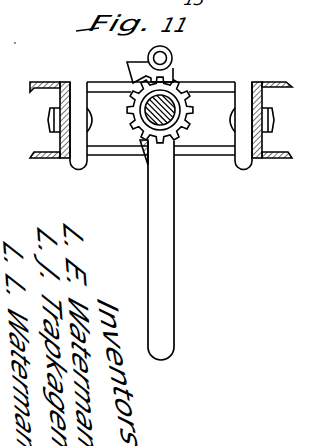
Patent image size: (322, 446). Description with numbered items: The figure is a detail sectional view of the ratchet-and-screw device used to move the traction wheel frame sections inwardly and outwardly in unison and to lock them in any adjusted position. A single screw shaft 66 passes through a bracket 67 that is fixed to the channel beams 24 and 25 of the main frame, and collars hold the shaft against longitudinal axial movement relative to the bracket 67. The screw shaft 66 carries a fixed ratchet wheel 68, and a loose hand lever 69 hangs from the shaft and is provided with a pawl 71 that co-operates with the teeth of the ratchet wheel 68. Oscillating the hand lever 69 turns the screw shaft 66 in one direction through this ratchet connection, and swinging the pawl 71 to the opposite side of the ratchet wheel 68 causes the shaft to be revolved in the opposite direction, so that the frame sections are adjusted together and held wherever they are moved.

The channel beam 24 is at (309, 72).
The channel beam 25 is at (34, 83).
The screw shaft 66 is at (168, 115).
The bracket 67 is at (204, 100).
The ratchet wheel 68 is at (143, 141).
The hand lever 69 is at (168, 212).
The pawl 71 is at (126, 62).